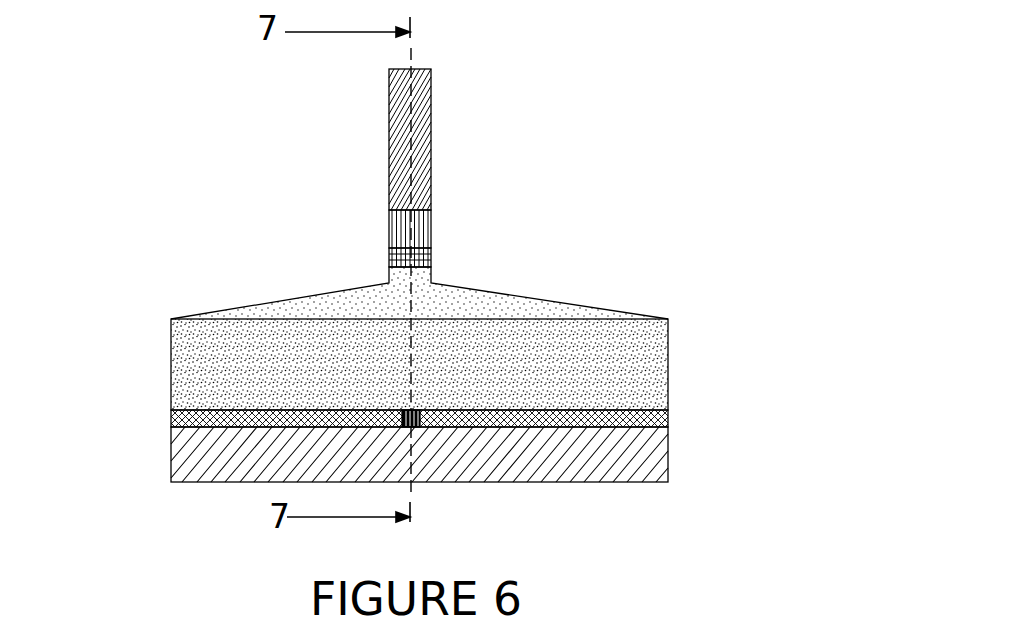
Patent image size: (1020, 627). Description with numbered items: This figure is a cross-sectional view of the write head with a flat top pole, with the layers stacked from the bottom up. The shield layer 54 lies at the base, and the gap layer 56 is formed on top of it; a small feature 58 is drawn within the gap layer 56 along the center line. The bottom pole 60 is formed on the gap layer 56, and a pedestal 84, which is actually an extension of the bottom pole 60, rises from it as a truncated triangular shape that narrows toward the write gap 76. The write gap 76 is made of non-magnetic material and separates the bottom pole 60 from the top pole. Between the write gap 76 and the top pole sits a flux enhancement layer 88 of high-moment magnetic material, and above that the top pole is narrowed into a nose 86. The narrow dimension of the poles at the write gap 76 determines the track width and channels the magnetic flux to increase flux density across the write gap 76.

The shield layer 54 is at (197, 449).
The gap layer 56 is at (660, 421).
The conductive via 58 is at (415, 428).
The bottom pole 60 is at (197, 343).
The write gap 76 is at (420, 258).
The pedestal 84 is at (360, 300).
The nose 86 is at (392, 147).
The flux enhancement layer 88 is at (420, 232).